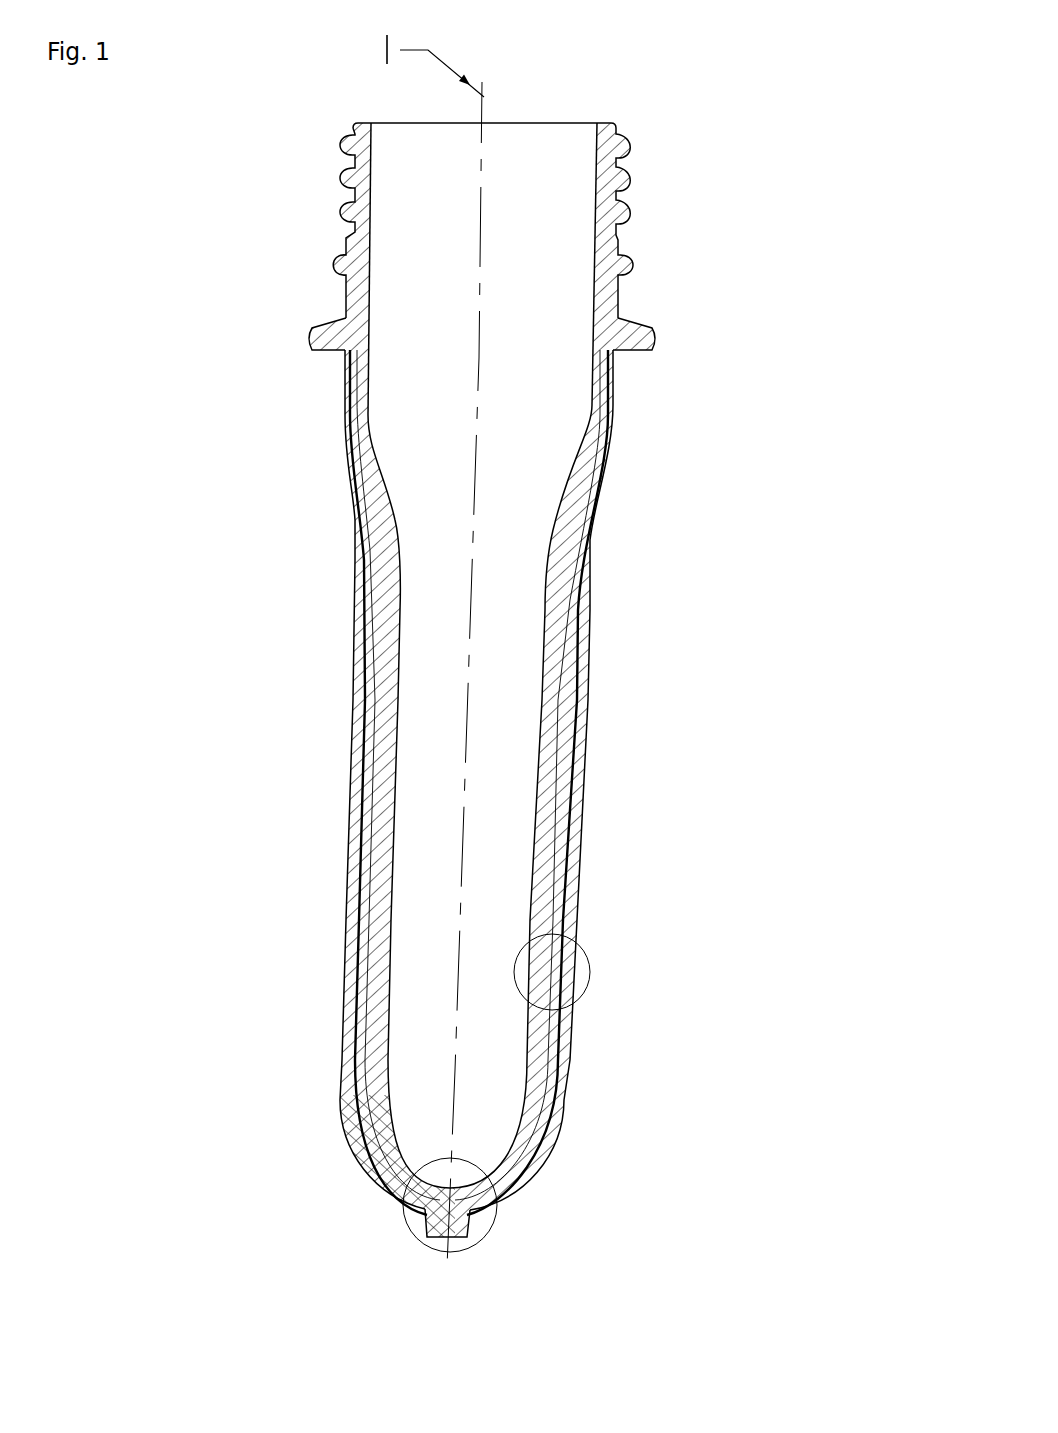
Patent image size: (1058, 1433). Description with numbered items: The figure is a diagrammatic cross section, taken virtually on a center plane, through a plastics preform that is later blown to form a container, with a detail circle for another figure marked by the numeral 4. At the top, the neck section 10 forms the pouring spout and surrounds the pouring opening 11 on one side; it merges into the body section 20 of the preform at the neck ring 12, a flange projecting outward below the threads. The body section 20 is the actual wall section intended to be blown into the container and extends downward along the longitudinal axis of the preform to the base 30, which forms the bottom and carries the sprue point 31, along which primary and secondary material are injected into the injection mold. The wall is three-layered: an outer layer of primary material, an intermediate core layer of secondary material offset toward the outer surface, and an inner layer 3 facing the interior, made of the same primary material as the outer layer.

The neck section 10 is at (303, 207).
The pouring opening 11 is at (546, 121).
The neck ring 12 is at (651, 357).
The body section 20 is at (325, 722).
The base 30 is at (330, 1178).
The sprue point 31 is at (453, 1239).
The layer facing toward the interior of the preform 3 is at (588, 1008).
The detail region of fig 4 is at (414, 1260).